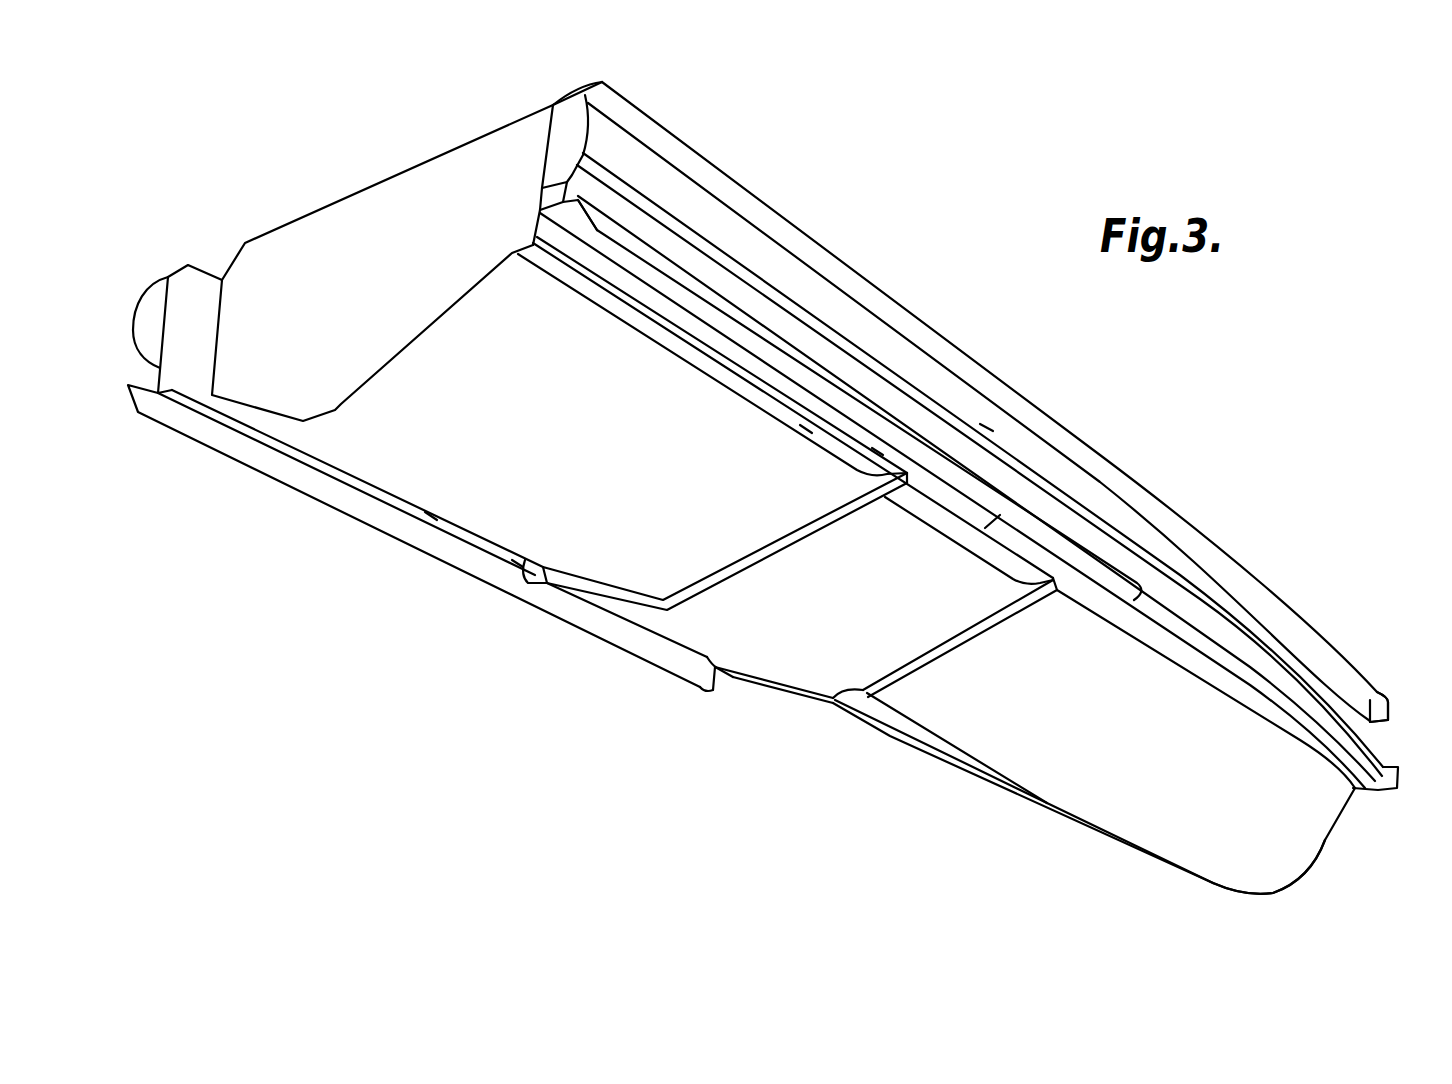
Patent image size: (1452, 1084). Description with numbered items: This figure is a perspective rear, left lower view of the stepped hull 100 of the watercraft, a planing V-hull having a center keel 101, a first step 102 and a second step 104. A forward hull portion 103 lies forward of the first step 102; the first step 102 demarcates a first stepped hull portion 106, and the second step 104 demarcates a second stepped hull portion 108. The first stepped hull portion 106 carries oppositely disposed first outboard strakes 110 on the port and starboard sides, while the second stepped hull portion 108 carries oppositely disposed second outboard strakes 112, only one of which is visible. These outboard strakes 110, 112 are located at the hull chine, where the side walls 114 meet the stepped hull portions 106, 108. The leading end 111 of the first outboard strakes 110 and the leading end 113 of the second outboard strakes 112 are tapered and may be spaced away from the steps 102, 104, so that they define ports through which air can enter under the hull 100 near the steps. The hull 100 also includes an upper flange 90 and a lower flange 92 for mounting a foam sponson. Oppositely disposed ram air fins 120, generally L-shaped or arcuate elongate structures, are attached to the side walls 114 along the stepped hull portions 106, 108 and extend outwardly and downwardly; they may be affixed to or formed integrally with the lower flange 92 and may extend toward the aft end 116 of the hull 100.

The stepped hull 100 is at (838, 207).
The aft end 116 is at (413, 182).
The ram air fins 120 is at (607, 228).
The second stepped hull portion 108 is at (598, 452).
The first stepped hull portion 106 is at (868, 612).
The forward hull portion 103 is at (1138, 757).
The second step 104 is at (613, 595).
The first step 102 is at (833, 692).
The center keel 101 is at (1273, 895).
The first outboard strakes 110 is at (965, 545).
The leading end of first outboard strakes 111 is at (1042, 577).
The second outboard strakes 112 is at (812, 433).
The leading end of second outboard strakes 113 is at (883, 455).
The side walls 114 is at (993, 431).
The upper flange 90 is at (1372, 690).
The lower flange 92 is at (1397, 768).